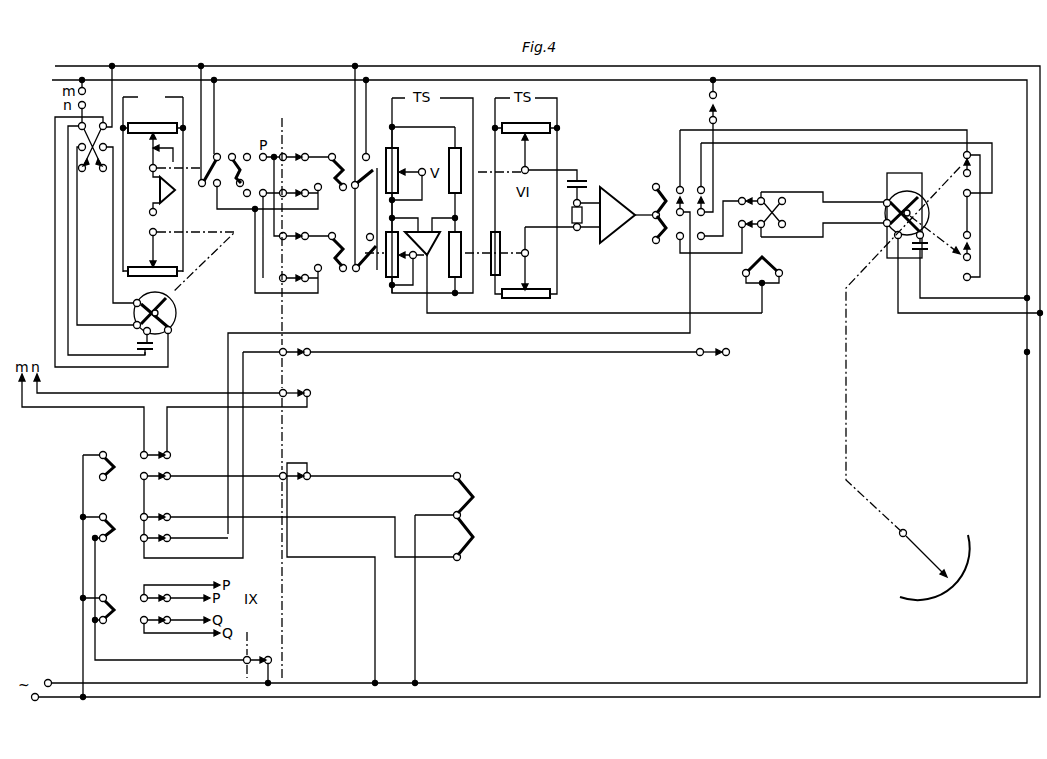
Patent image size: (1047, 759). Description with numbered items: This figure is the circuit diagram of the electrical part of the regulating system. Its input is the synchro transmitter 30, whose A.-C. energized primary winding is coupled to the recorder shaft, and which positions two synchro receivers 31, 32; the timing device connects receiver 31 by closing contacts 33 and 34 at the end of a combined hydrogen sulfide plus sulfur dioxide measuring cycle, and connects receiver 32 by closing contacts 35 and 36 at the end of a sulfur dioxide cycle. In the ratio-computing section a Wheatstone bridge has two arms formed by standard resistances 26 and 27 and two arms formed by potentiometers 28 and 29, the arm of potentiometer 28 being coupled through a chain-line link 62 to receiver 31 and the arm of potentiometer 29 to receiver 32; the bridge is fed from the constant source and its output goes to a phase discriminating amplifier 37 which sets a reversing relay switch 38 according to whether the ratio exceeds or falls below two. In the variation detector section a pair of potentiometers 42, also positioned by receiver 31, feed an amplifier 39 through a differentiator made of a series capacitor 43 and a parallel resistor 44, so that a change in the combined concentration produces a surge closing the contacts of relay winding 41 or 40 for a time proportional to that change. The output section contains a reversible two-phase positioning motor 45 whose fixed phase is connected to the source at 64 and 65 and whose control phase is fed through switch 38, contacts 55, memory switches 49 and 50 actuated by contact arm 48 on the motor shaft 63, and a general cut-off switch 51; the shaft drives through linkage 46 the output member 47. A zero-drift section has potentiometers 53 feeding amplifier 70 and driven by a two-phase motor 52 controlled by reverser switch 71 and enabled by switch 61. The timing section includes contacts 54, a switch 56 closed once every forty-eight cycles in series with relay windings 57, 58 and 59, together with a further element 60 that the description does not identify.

The standard resistance 26 is at (449, 150).
The standard resistance 27 is at (458, 229).
The potentiometer 28 is at (398, 163).
The potentiometer 29 is at (386, 278).
The synchro transmitter 30 is at (218, 155).
The synchro receiver 31 is at (337, 156).
The synchro receiver 32 is at (337, 241).
The contacts 33 is at (286, 155).
The contacts 34 is at (286, 193).
The contacts 35 is at (290, 236).
The contacts 36 is at (288, 275).
The phase discriminating amplifier 37 is at (432, 254).
The reversing relay switch 38 is at (780, 268).
The amplifier 39 is at (608, 190).
The relay winding 40 is at (654, 184).
The relay winding 41 is at (656, 244).
The potentiometers 42 is at (525, 124).
The series capacitor 43 is at (582, 178).
The parallel resistor 44 is at (575, 230).
The reversible positioning motor 45 is at (910, 195).
The linkage 46 is at (869, 513).
The output member 47 is at (938, 550).
The contact arm 48 is at (958, 178).
The memory switch 49 is at (963, 156).
The memory switch 50 is at (980, 252).
The general cut-off switch 51 is at (716, 111).
The reversible two-phase motor 52 is at (176, 314).
The potentiometers 53 is at (166, 122).
The contacts 54 is at (304, 478).
The contacts 55 is at (304, 357).
The normally-open switch 56 is at (254, 655).
The relay winding 57 is at (110, 454).
The relay winding 58 is at (111, 516).
The relay winding 59 is at (111, 598).
The resistor 60 is at (628, 524).
The switch 61 is at (304, 388).
The chain-line link 62 is at (380, 158).
The motor shaft 63 is at (886, 183).
The fixed phase connection 64 is at (1026, 296).
The fixed phase connection 65 is at (1037, 314).
The amplifier 70 is at (172, 197).
The reverser switch 71 is at (90, 172).